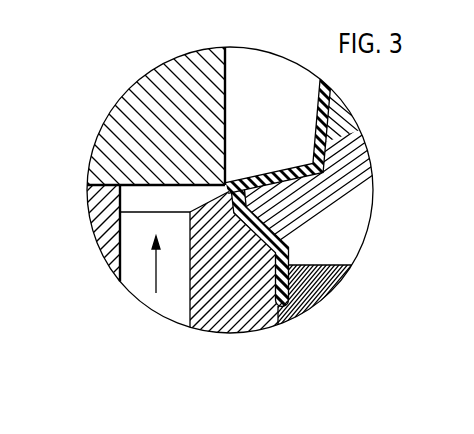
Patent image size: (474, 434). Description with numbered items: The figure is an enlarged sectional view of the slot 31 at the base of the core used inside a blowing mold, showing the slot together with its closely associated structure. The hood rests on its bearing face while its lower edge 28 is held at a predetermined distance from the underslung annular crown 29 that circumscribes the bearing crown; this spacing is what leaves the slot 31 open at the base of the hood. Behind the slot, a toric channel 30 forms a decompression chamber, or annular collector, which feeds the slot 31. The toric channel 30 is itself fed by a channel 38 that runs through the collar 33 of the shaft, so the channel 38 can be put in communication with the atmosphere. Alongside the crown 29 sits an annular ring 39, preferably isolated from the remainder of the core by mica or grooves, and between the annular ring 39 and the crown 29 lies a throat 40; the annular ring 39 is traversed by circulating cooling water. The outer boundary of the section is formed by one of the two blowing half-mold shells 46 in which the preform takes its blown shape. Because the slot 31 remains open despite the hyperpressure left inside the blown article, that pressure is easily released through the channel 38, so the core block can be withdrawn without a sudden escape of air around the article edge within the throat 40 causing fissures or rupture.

The lower edge 28 is at (130, 184).
The underslung annular crown 29 is at (210, 210).
The toric channel 30 is at (226, 145).
The slot 31 is at (227, 184).
The collar 33 is at (107, 250).
The channel 38 is at (155, 283).
The annular ring 39 is at (335, 278).
The throat 40 is at (291, 294).
The blowing half-mold shell 46 is at (345, 237).